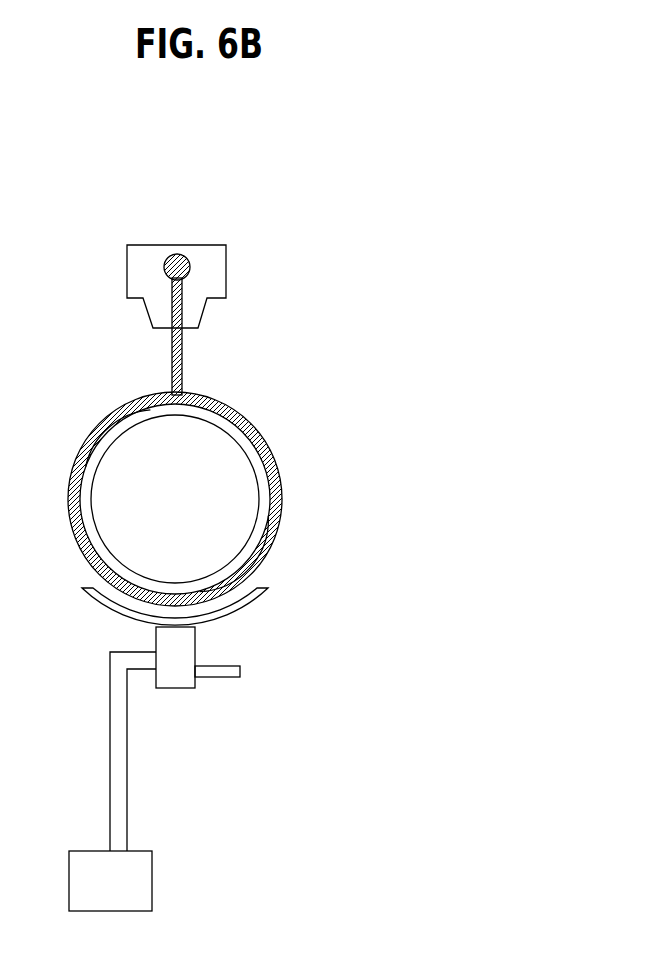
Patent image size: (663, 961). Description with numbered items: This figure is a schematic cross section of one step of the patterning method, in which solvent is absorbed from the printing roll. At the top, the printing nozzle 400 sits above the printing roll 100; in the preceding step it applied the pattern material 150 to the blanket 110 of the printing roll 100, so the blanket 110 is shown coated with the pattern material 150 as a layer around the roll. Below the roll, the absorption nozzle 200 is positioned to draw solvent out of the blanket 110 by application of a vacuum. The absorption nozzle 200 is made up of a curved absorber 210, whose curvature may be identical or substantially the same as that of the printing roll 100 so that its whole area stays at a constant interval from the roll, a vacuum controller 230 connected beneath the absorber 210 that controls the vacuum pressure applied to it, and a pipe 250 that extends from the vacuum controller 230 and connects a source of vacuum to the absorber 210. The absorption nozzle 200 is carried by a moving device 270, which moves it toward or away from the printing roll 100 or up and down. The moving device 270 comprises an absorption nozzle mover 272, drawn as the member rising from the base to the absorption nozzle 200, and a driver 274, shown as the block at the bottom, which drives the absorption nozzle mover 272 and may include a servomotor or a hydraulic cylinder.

The printing nozzle 400 is at (215, 272).
The printing roll 100 is at (227, 462).
The blanket 110 is at (265, 498).
The pattern material 150 is at (278, 527).
The absorption nozzle 200 is at (249, 643).
The absorber 210 is at (255, 600).
The vacuum controller 230 is at (187, 657).
The pipe 250 is at (240, 672).
The moving device 270 is at (203, 781).
The absorption nozzle mover 272 is at (120, 803).
The driver 274 is at (140, 880).